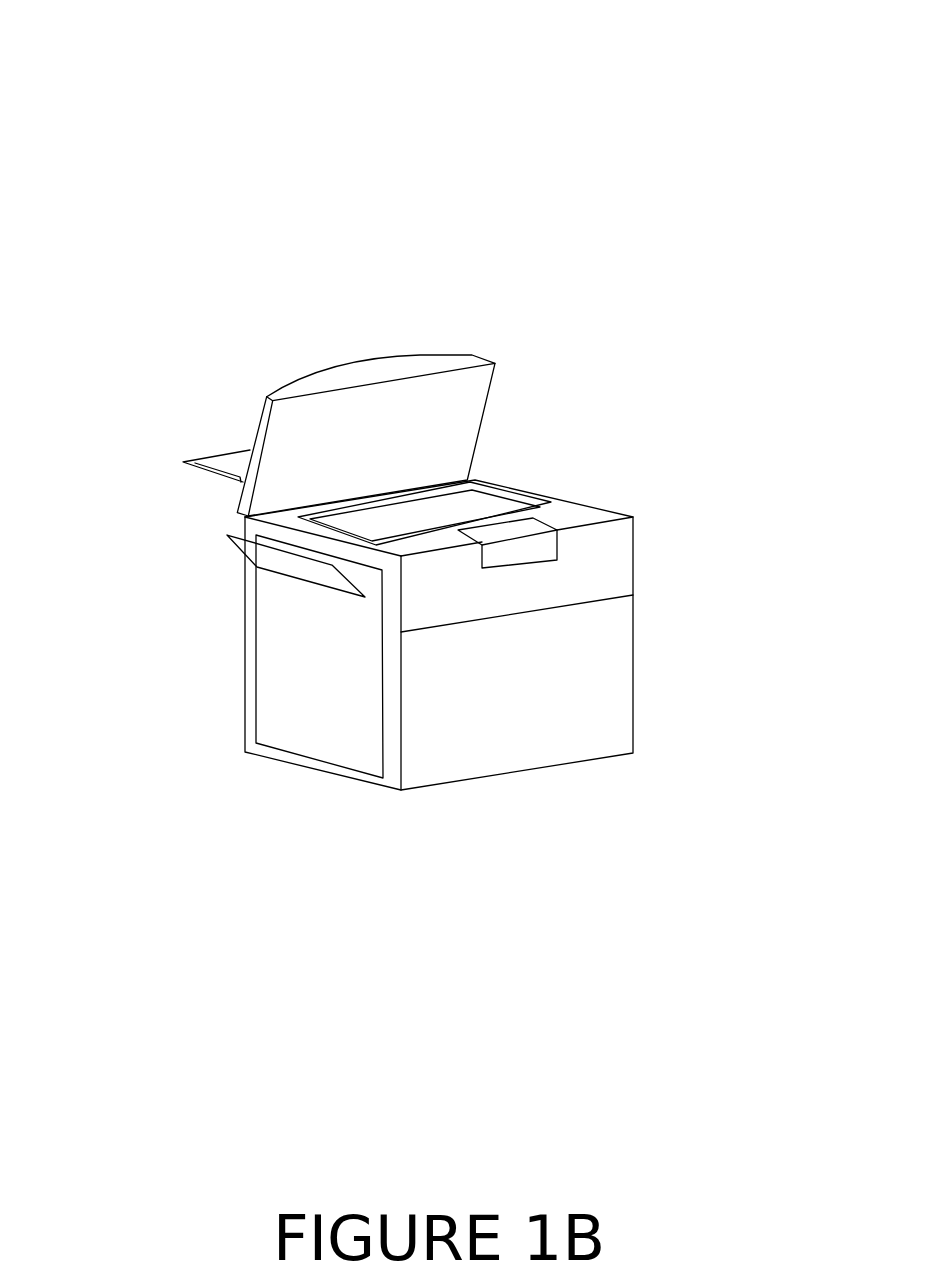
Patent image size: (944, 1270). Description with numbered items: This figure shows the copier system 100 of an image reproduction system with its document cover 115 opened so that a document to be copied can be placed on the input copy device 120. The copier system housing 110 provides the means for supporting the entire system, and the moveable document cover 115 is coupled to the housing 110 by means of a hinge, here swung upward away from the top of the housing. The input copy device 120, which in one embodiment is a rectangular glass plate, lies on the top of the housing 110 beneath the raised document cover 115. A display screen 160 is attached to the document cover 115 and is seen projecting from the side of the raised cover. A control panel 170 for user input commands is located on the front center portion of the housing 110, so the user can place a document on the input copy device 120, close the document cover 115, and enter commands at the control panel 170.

The copier system 100 is at (75, 47).
The copier system housing 110 is at (550, 767).
The document cover 115 is at (440, 354).
The input copy device 120 is at (495, 492).
The display screen 160 is at (190, 462).
The control panel 170 is at (517, 565).